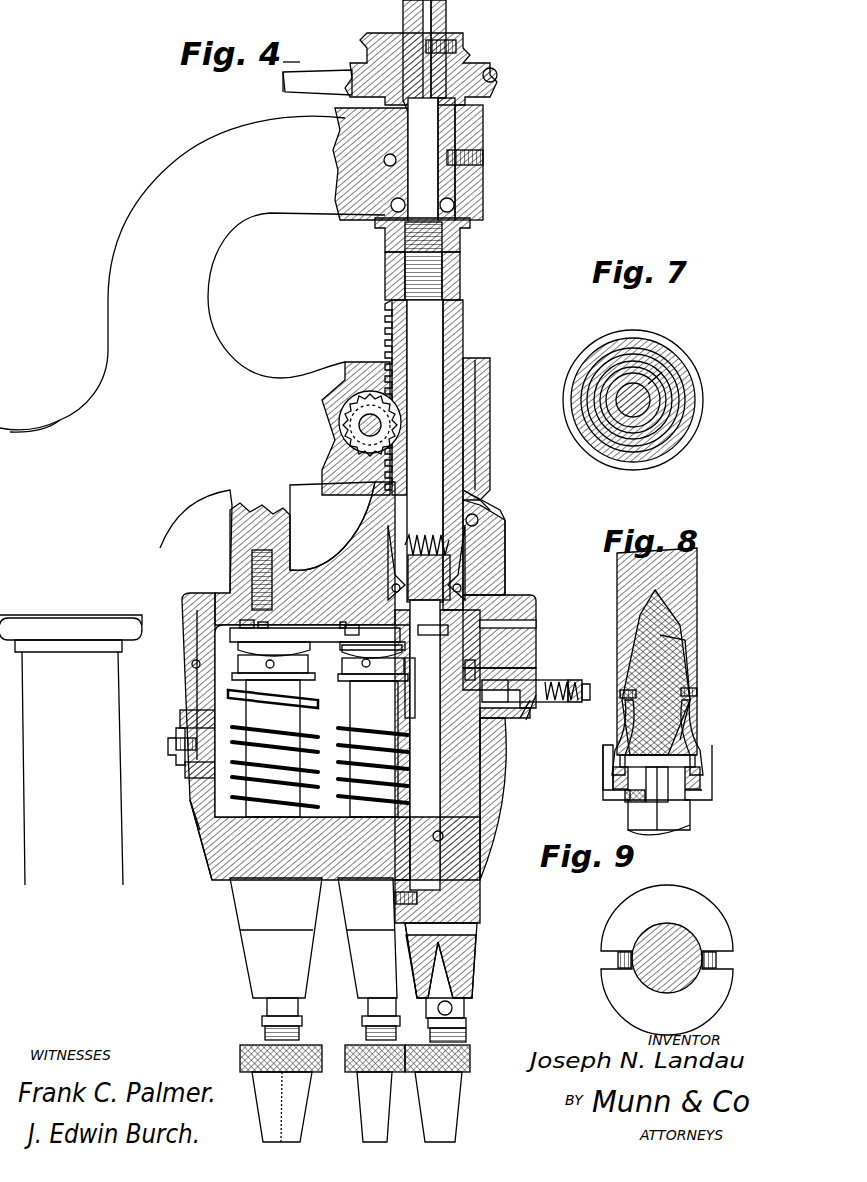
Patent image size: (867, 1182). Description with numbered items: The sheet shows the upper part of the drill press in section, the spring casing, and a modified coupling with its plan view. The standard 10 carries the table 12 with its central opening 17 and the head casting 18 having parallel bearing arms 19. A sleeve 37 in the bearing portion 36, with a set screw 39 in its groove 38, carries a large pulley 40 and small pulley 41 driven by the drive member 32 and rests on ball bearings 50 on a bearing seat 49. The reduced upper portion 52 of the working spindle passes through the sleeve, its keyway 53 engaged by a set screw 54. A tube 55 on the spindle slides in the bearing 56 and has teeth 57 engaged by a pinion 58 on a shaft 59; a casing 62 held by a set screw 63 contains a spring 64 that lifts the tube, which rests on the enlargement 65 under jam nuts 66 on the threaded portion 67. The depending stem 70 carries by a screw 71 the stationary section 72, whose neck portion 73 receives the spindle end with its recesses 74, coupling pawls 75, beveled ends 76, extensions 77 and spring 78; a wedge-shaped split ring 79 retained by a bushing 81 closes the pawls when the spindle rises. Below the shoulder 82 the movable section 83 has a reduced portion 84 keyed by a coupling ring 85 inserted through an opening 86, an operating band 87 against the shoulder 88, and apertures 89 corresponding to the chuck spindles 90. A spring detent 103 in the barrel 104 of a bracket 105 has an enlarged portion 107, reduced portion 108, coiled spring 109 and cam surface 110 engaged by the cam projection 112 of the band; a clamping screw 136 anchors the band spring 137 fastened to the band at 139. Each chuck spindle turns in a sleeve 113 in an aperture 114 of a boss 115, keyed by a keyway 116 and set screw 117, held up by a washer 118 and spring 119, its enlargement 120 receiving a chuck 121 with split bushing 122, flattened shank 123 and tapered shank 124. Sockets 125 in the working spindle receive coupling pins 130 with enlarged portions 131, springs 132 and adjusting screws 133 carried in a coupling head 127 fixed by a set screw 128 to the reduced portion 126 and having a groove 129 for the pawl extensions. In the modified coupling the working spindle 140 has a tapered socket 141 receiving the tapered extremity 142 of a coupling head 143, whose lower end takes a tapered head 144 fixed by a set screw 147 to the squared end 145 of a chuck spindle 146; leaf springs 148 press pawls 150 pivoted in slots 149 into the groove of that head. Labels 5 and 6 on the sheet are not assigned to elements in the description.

In FIG. 4, the spindle 5 is at (463, 335).
In FIG. 4, the head casing 6 is at (505, 512).
In FIG. 4, the standard 10 is at (110, 878).
In FIG. 4, the table 12 is at (455, 1088).
In FIG. 4, the central opening 17 is at (200, 148).
In FIG. 4, the head casting 18 is at (80, 430).
In FIG. 4, the bearing arms 19 is at (302, 385).
In FIG. 4, the endless drive member 32 is at (295, 80).
In FIG. 4, the bearing portion 36 is at (483, 138).
In FIG. 4, the sleeve 37 is at (483, 120).
In FIG. 4, the peripheral groove 38 is at (385, 160).
In FIG. 4, the set screw 39 is at (483, 160).
In FIG. 4, the large pulley 40 is at (497, 72).
In FIG. 4, the small pulley 41 is at (465, 33).
In FIG. 4, the bearing seat 49 is at (470, 225).
In FIG. 4, the ball bearings 50 is at (454, 205).
In FIG. 4, the reduced upper portion 52 is at (403, 18).
In FIG. 4, the keyway 53 is at (433, 20).
In FIG. 4, the set screw 54 is at (456, 46).
In FIG. 4, the tube 55 is at (490, 360).
In FIG. 4, the bearing 56 is at (480, 425).
In FIG. 4, the teeth 57 is at (392, 328).
In FIG. 4, the pinion 58 is at (340, 420).
In FIG. 4, the shaft 59 is at (345, 370).
In FIG. 7, the shaft 59 is at (620, 405).
In FIG. 7, the casing 62 is at (665, 455).
In FIG. 4, the set screw 63 is at (372, 478).
In FIG. 7, the coiled spring 64 is at (662, 385).
In FIG. 4, the enlargement 65 is at (487, 495).
In FIG. 4, the jam nuts 66 is at (460, 258).
In FIG. 4, the threaded portion 67 is at (385, 258).
In FIG. 4, the depending stem 70 is at (280, 528).
In FIG. 4, the attaching screw 71 is at (240, 568).
In FIG. 4, the stationary section 72 is at (190, 625).
In FIG. 4, the neck portion 73 is at (478, 522).
In FIG. 4, the vertical recesses 74 is at (468, 566).
In FIG. 4, the coupling pawls 75 is at (465, 572).
In FIG. 4, the beveled ends 76 is at (360, 540).
In FIG. 8, the beveled ends 76 is at (699, 735).
In FIG. 4, the inward extensions 77 is at (540, 640).
In FIG. 8, the inward extensions 77 is at (702, 790).
In FIG. 4, the coiled spring 78 is at (428, 520).
In FIG. 4, the split ring 79 is at (470, 547).
In FIG. 4, the bushing 81 is at (520, 592).
In FIG. 4, the interior shoulder 82 is at (195, 610).
In FIG. 4, the movable section 83 is at (188, 812).
In FIG. 4, the reduced upper portion 84 is at (182, 725).
In FIG. 4, the coupling ring 85 is at (190, 667).
In FIG. 4, the opening 86 is at (536, 660).
In FIG. 4, the operating band 87 is at (185, 770).
In FIG. 4, the shoulder 88 is at (185, 790).
In FIG. 4, the apertures 89 is at (240, 698).
In FIG. 4, the chuck spindles 90 is at (480, 855).
In FIG. 4, the spring detent 103 is at (584, 684).
In FIG. 4, the barrel 104 is at (530, 720).
In FIG. 4, the bracket 105 is at (536, 625).
In FIG. 4, the enlarged portion 107 is at (542, 725).
In FIG. 4, the reduced portion 108 is at (525, 691).
In FIG. 4, the coiled spring 109 is at (575, 680).
In FIG. 4, the cam surface 110 is at (505, 718).
In FIG. 4, the cam projection 112 is at (494, 739).
In FIG. 4, the sleeves 113 is at (360, 778).
In FIG. 4, the vertical aperture 114 is at (495, 830).
In FIG. 4, the depending bosses 115 is at (258, 900).
In FIG. 4, the keyways 116 is at (400, 880).
In FIG. 4, the set screw 117 is at (400, 905).
In FIG. 4, the bearing plates 118 is at (240, 674).
In FIG. 4, the coiled springs 119 is at (355, 750).
In FIG. 4, the chuck-receiving enlargements 120 is at (280, 960).
In FIG. 4, the chucks 121 is at (300, 1105).
In FIG. 4, the bushing 122 is at (302, 1032).
In FIG. 4, the flattened shank portion 123 is at (450, 1008).
In FIG. 4, the tapered shank 124 is at (415, 965).
In FIG. 4, the sockets 125 is at (535, 606).
In FIG. 4, the reduced portion 126 is at (305, 648).
In FIG. 4, the coupling head 127 is at (308, 664).
In FIG. 4, the set screw 128 is at (274, 666).
In FIG. 4, the peripheral groove 129 is at (418, 700).
In FIG. 4, the coupling pins 130 is at (260, 632).
In FIG. 4, the enlarged portions 131 is at (372, 637).
In FIG. 4, the coiled springs 132 is at (373, 663).
In FIG. 4, the adjusting screws 133 is at (455, 676).
In FIG. 4, the clamping screw 136 is at (421, 625).
In FIG. 4, the band spring 137 is at (175, 738).
In FIG. 4, the anchoring point 139 is at (172, 752).
In FIG. 8, the working spindle 140 is at (697, 572).
In FIG. 8, the tapered socket 141 is at (697, 608).
In FIG. 8, the tapered upper extremity 142 is at (692, 640).
In FIG. 8, the coupling head 143 is at (674, 745).
In FIG. 9, the coupling head 143 is at (675, 940).
In FIG. 8, the tapered head 144 is at (690, 805).
In FIG. 8, the squared end 145 is at (657, 820).
In FIG. 8, the chuck spindle 146 is at (672, 830).
In FIG. 8, the set screw 147 is at (630, 800).
In FIG. 8, the leaf springs 148 is at (697, 692).
In FIG. 9, the leaf springs 148 is at (622, 952).
In FIG. 8, the slots 149 is at (712, 770).
In FIG. 9, the slots 149 is at (601, 960).
In FIG. 8, the pawls 150 is at (605, 750).